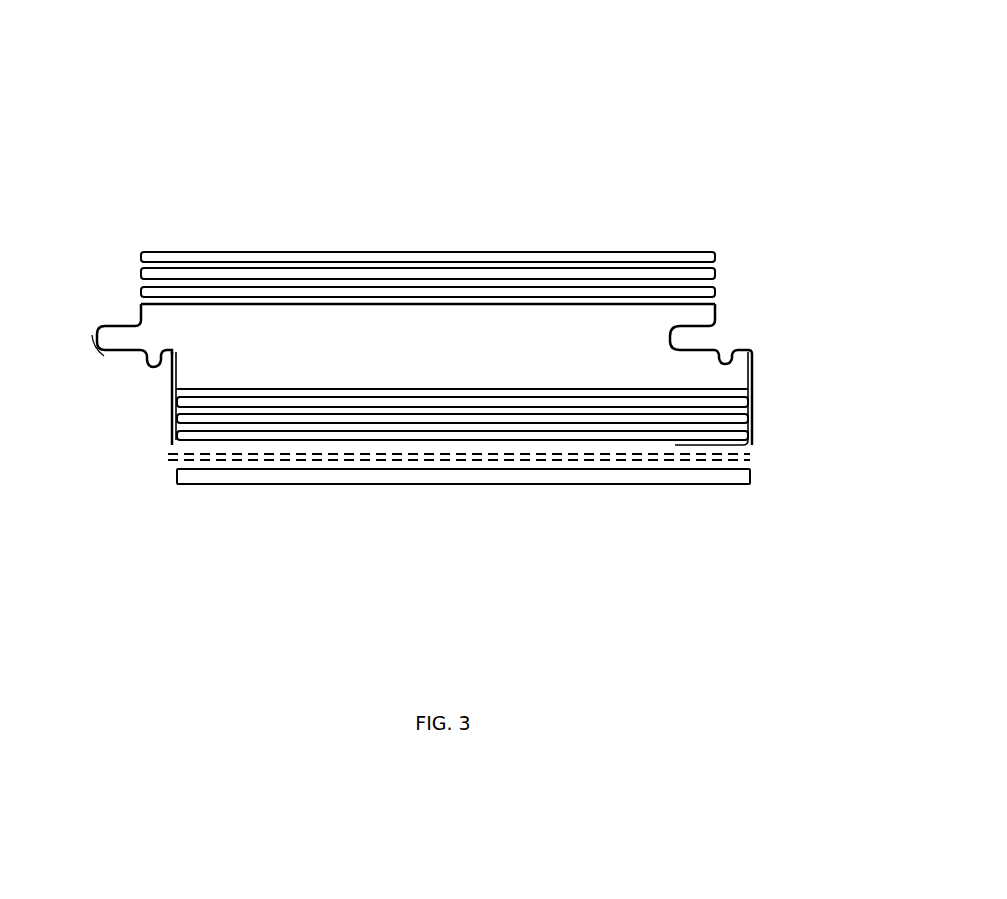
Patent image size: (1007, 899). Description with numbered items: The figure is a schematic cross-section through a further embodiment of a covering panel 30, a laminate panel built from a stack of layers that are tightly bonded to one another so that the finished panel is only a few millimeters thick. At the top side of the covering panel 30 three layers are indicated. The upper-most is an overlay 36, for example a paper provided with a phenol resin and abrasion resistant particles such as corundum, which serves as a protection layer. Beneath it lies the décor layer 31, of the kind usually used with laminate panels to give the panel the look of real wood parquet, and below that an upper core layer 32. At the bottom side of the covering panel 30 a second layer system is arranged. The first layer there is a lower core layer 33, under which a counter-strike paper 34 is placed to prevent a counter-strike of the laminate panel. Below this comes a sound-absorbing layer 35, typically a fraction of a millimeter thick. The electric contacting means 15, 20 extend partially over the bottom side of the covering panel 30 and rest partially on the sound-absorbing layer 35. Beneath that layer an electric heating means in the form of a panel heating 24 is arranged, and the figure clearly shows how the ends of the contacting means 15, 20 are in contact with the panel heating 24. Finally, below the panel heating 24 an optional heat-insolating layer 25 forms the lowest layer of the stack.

The covering panel 30 is at (646, 158).
The overlay 36 is at (562, 256).
The décor layer 31 is at (463, 274).
The upper core layer 32 is at (368, 293).
The electric contacting means 20 is at (753, 370).
The electric contacting means 15 is at (108, 358).
The lower core layer 33 is at (245, 400).
The counter-strike paper 34 is at (328, 420).
The sound-absorbing layer 35 is at (415, 435).
The panel heating 24 is at (170, 457).
The heat-insolating layer 25 is at (632, 475).